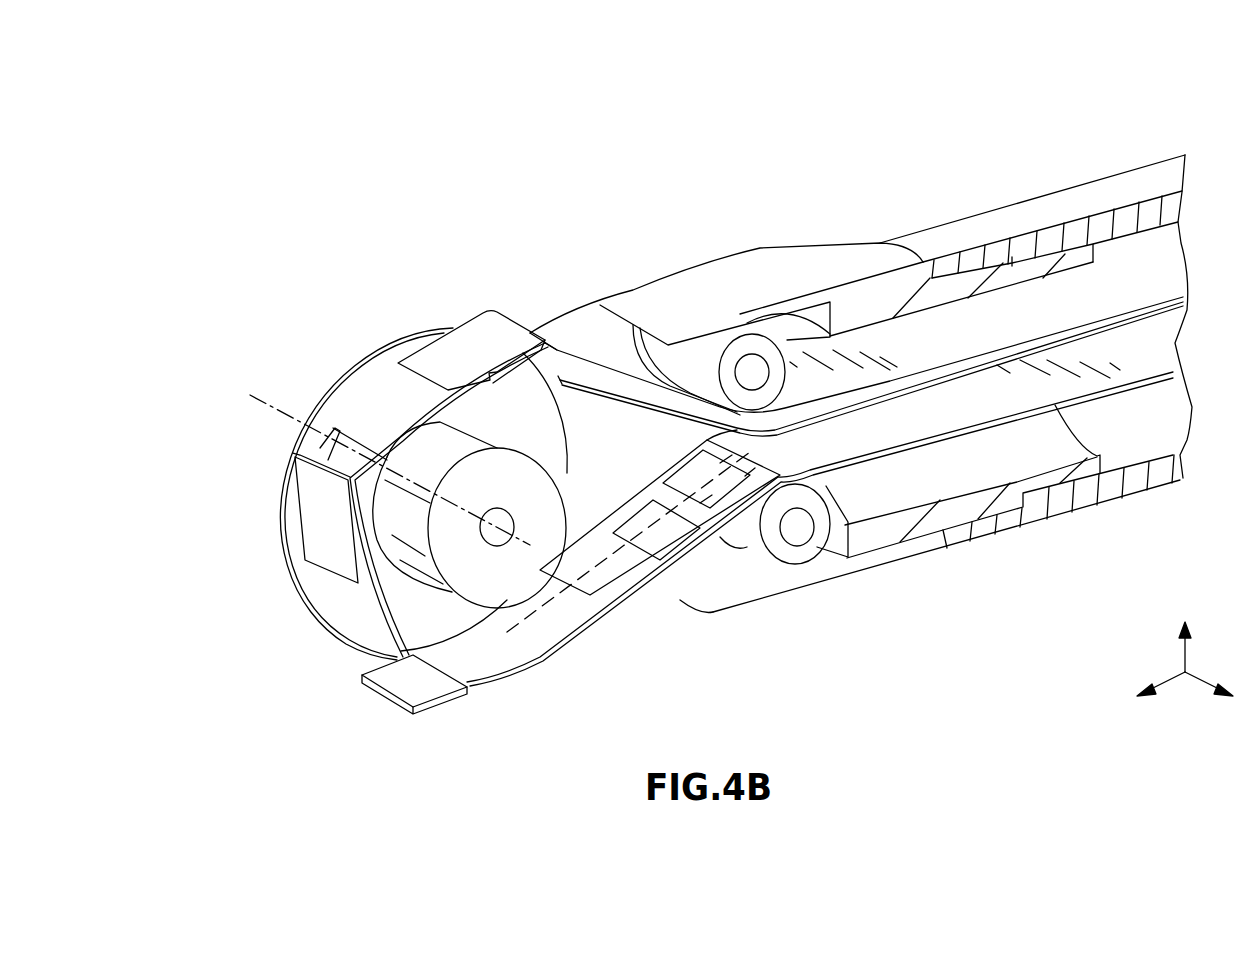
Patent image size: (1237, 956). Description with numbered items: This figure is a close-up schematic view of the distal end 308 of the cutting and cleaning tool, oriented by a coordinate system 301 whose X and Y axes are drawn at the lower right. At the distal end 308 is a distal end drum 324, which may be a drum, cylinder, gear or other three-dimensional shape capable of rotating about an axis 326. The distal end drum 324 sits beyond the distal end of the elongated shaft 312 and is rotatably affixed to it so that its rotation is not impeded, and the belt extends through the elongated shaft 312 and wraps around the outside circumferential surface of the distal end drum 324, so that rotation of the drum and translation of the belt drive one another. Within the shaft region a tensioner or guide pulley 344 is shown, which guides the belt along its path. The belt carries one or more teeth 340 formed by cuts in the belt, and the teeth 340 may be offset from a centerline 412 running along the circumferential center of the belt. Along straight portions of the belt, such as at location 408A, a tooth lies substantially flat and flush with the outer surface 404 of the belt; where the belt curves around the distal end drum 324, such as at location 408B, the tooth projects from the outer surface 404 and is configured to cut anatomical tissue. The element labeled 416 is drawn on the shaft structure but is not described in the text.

The distal end 308 is at (230, 252).
The outer surface 404 is at (378, 372).
The distal end drum 324 is at (397, 618).
The axis 326 is at (287, 413).
The location 408B is at (313, 538).
The teeth 340 is at (498, 336).
The centerline 412 is at (513, 627).
The location 408A is at (626, 593).
The tensioner or guide pulley 344 is at (703, 357).
The elongated shaft 312 is at (990, 187).
The rail 416 is at (817, 450).
The coordinate system 301 is at (1185, 675).